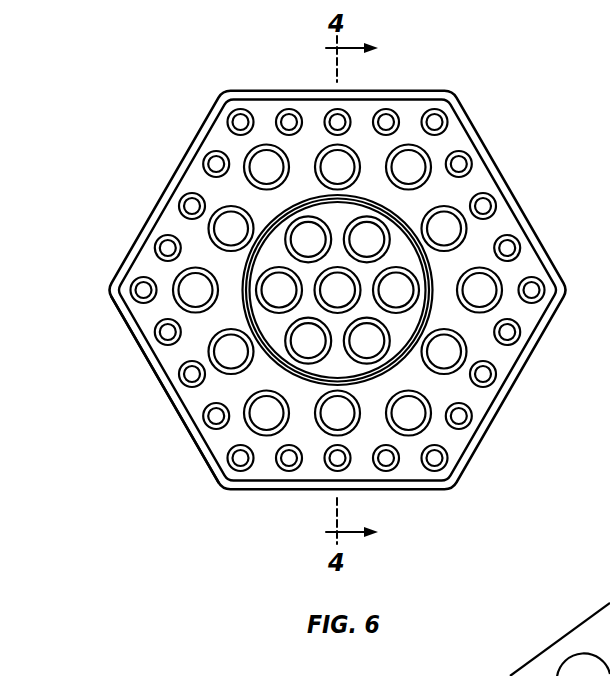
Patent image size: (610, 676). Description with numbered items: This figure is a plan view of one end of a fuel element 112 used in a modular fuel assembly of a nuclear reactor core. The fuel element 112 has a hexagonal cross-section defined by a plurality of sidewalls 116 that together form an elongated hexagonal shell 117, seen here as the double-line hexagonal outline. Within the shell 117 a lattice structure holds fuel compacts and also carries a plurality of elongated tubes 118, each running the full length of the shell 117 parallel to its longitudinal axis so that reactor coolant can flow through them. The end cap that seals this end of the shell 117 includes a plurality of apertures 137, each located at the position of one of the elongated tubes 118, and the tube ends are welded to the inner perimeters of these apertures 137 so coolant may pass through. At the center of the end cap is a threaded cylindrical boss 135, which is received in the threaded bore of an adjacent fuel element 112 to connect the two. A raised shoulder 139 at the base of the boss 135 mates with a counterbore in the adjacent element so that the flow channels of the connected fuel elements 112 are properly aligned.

The fuel element 112 is at (138, 163).
The sidewalls 116 is at (250, 90).
The shell 117 is at (191, 481).
The elongated tube 118 is at (228, 213).
The cylindrical boss 135 is at (291, 394).
The apertures 137 is at (151, 270).
The raised shoulder 139 is at (397, 214).